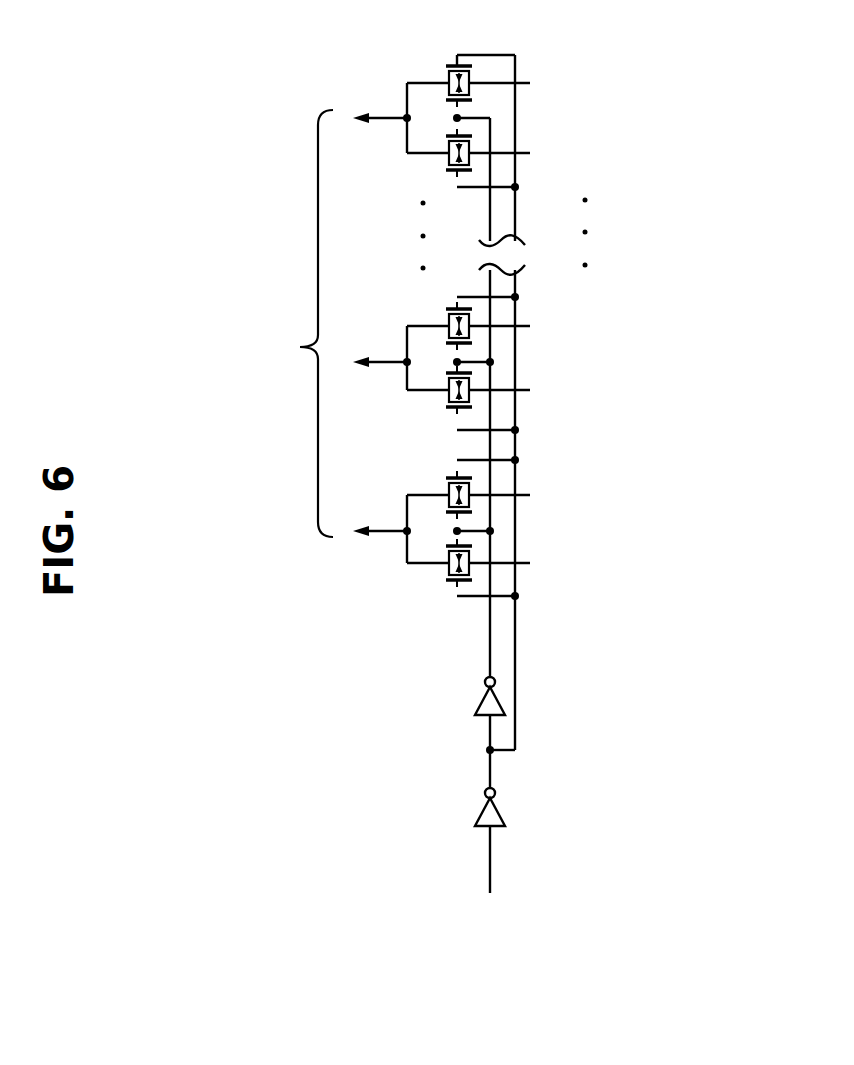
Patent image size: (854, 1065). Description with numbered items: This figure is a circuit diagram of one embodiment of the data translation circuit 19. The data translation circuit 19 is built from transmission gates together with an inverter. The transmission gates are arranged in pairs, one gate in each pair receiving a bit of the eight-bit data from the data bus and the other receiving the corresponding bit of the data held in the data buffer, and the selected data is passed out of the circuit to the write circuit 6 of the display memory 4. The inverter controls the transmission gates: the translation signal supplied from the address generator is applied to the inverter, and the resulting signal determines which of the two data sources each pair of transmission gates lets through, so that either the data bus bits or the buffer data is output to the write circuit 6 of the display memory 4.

The data translation circuit 19 is at (396, 676).
The display memory 4 is at (288, 322).
The write circuit 6 is at (339, 324).